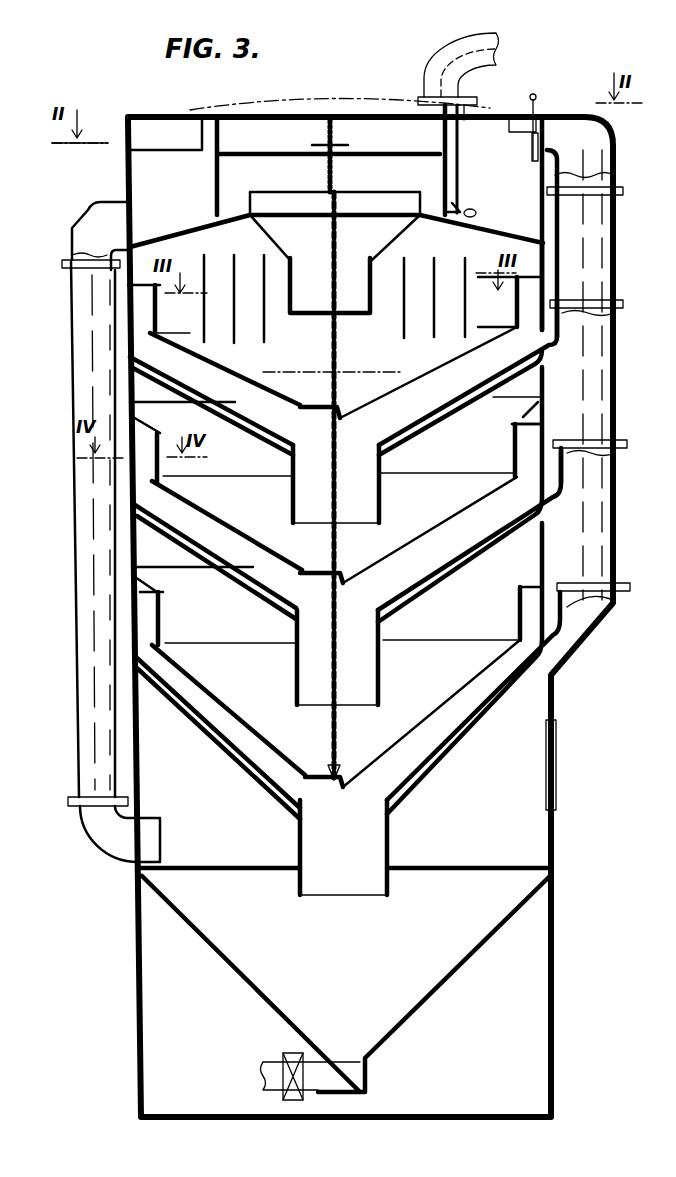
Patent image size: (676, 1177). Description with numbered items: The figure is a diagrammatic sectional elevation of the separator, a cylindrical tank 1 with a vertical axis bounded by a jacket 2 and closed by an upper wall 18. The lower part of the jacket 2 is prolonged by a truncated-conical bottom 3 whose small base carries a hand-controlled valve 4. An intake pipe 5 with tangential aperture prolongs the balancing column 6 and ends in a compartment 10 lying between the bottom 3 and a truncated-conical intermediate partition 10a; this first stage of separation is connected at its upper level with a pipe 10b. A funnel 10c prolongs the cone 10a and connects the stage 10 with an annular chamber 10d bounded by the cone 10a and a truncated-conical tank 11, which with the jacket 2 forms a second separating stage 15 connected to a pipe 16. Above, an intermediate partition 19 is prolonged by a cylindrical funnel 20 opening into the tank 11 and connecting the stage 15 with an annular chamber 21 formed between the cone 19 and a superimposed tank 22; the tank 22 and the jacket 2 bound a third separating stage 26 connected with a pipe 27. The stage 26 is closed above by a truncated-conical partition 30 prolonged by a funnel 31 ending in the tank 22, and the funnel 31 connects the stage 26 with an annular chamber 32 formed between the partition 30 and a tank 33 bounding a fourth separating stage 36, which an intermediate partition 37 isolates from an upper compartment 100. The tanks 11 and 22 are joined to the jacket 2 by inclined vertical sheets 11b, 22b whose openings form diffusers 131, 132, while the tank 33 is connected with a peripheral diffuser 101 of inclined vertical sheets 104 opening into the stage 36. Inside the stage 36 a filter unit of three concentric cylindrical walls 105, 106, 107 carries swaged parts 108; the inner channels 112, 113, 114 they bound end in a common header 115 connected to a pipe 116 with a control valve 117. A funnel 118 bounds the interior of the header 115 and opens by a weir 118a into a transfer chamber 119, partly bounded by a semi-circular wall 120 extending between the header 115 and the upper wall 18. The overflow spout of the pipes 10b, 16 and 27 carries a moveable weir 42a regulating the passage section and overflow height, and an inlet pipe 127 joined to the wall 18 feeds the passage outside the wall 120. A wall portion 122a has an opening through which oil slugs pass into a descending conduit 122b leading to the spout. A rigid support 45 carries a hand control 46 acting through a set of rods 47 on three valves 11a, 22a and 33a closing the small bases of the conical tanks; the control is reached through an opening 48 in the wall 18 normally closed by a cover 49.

The cylindrical tank 1 is at (562, 703).
The jacket 2 is at (555, 850).
The bottom 3 is at (460, 970).
The hand-controlled valve 4 is at (290, 1052).
The intake pipe 5 is at (98, 843).
The balancing column 6 is at (72, 585).
The compartment 10 is at (223, 823).
The intermediate partition 10a is at (449, 747).
The pipe 10b is at (575, 625).
The funnel 10c is at (388, 845).
The annular chamber 10d is at (426, 730).
The tank 11 is at (258, 711).
The valve 11a is at (320, 773).
The vertical sheets 11b is at (165, 640).
The second stage of separation 15 is at (434, 683).
The pipe 16 is at (590, 468).
The upper wall 18 is at (468, 118).
The intermediate partition 19 is at (511, 535).
The cylindrical funnel 20 is at (295, 638).
The annular chamber 21 is at (215, 575).
The tank 22 is at (420, 540).
The valve 22a is at (345, 572).
The vertical sheets 22b is at (150, 475).
The third separating stage 26 is at (258, 475).
The pipe 27 is at (595, 330).
The intermediate partition 30 is at (476, 400).
The funnel 31 is at (380, 470).
The annular chamber 32 is at (280, 423).
The tank 33 is at (462, 361).
The valve 33a is at (348, 416).
The fourth separating stage 36 is at (384, 356).
The intermediate partition 37 is at (500, 226).
The moveable weir 42a is at (537, 130).
The rigid support 45 is at (280, 155).
The hand control 46 is at (348, 143).
The set of rods 47 is at (330, 360).
The opening 48 is at (237, 130).
The cover 49 is at (307, 96).
The upper compartment 100 is at (146, 174).
The peripheral diffuser 101 is at (138, 297).
The inclined vertical sheets 104 is at (546, 292).
The concentric cylindrical wall 105 is at (190, 232).
The concentric cylindrical wall 106 is at (218, 245).
The concentric cylindrical wall 107 is at (280, 235).
The swaged parts 108 is at (250, 370).
The inner channel 112 is at (465, 305).
The inner channel 113 is at (417, 270).
The inner channel 114 is at (272, 295).
The common header 115 is at (236, 255).
The pipe 116 is at (461, 208).
The control valve 117 is at (477, 212).
The funnel 118 is at (333, 305).
The weir 118a is at (415, 205).
The transfer chamber 119 is at (460, 170).
The semi-circular wall 120 is at (480, 176).
The portion of the wall 122a is at (170, 163).
The conduit 122b is at (185, 108).
The inlet pipe 127 is at (432, 62).
The diffuser 131 is at (176, 603).
The diffuser 132 is at (167, 437).